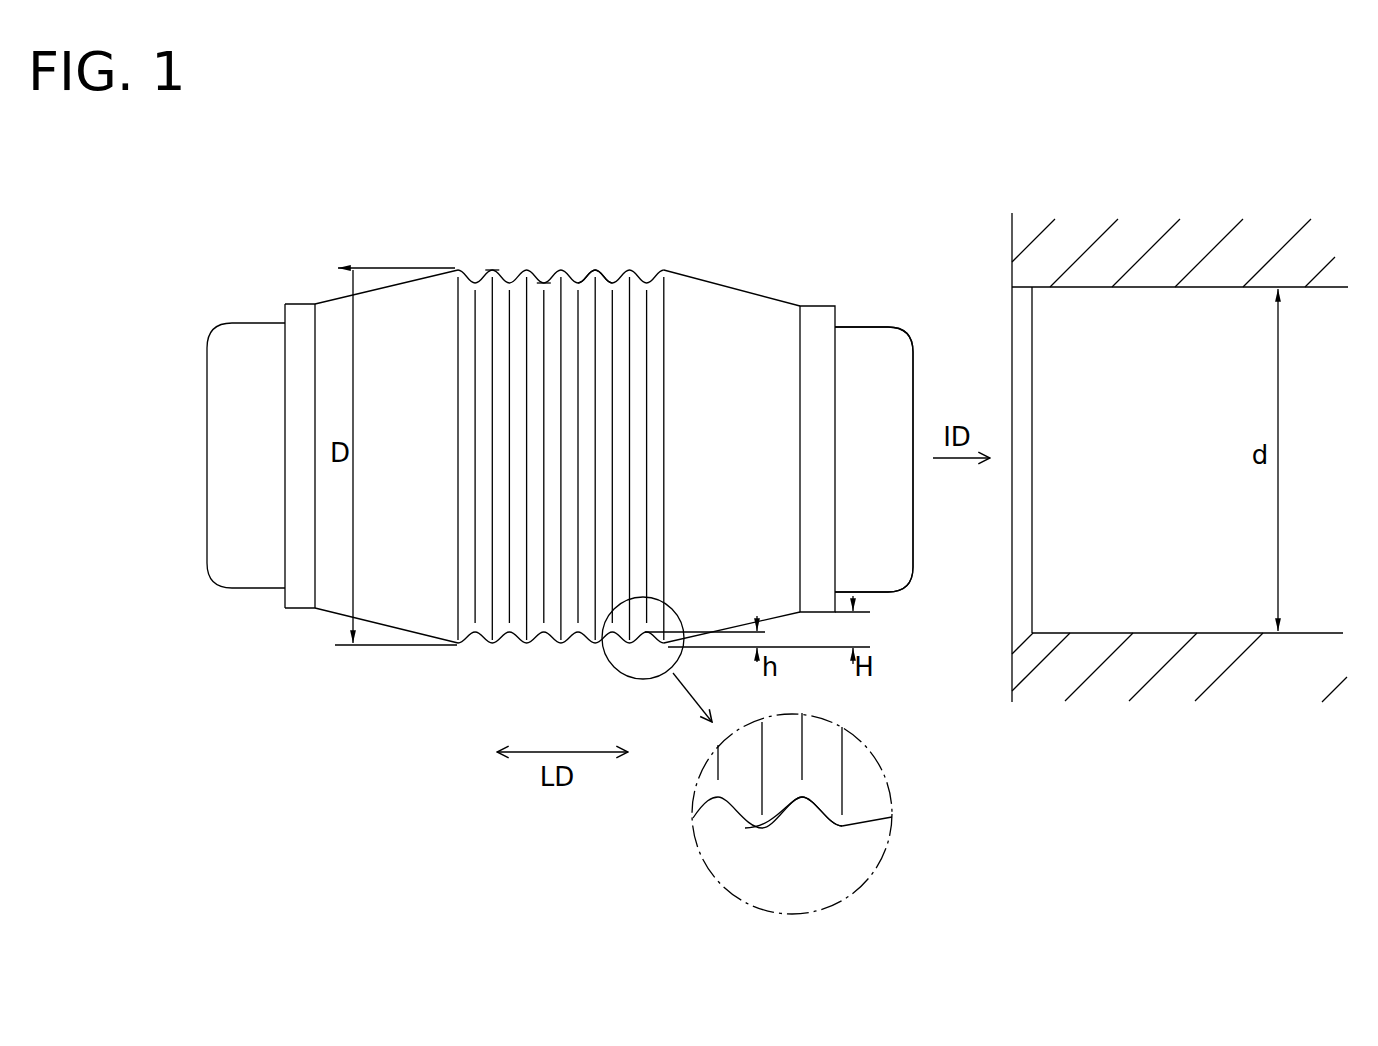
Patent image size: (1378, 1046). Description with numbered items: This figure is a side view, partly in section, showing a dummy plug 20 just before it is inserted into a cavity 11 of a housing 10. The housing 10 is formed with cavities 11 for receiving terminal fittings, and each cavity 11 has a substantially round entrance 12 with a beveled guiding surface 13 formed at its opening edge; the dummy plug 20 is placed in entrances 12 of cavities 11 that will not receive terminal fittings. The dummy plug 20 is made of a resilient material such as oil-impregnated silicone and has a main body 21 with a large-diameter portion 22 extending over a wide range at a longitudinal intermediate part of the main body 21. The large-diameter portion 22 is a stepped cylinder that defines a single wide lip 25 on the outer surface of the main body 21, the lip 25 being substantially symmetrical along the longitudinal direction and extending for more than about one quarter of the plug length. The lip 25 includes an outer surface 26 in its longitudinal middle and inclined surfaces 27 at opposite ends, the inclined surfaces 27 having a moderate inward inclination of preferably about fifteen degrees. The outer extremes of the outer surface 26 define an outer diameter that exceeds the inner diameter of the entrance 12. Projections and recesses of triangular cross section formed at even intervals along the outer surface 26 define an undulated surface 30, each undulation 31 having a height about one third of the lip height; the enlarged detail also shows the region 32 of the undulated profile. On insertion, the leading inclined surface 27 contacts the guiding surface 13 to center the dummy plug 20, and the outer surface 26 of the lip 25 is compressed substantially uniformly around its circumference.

The housing 10 is at (1210, 185).
The cavity 11 is at (1338, 290).
The entrance 12 is at (1132, 290).
The beveled guiding surface 13 is at (1006, 287).
The dummy plug 20 is at (765, 195).
The main body 21 is at (862, 345).
The large-diameter portion 22 is at (815, 308).
The lip 25 is at (413, 236).
The outer surface 26 is at (593, 243).
The inclined surface 27 is at (325, 300).
The undulated surface 30 is at (544, 282).
The undulation 31 is at (492, 270).
The slope 32 is at (805, 800).